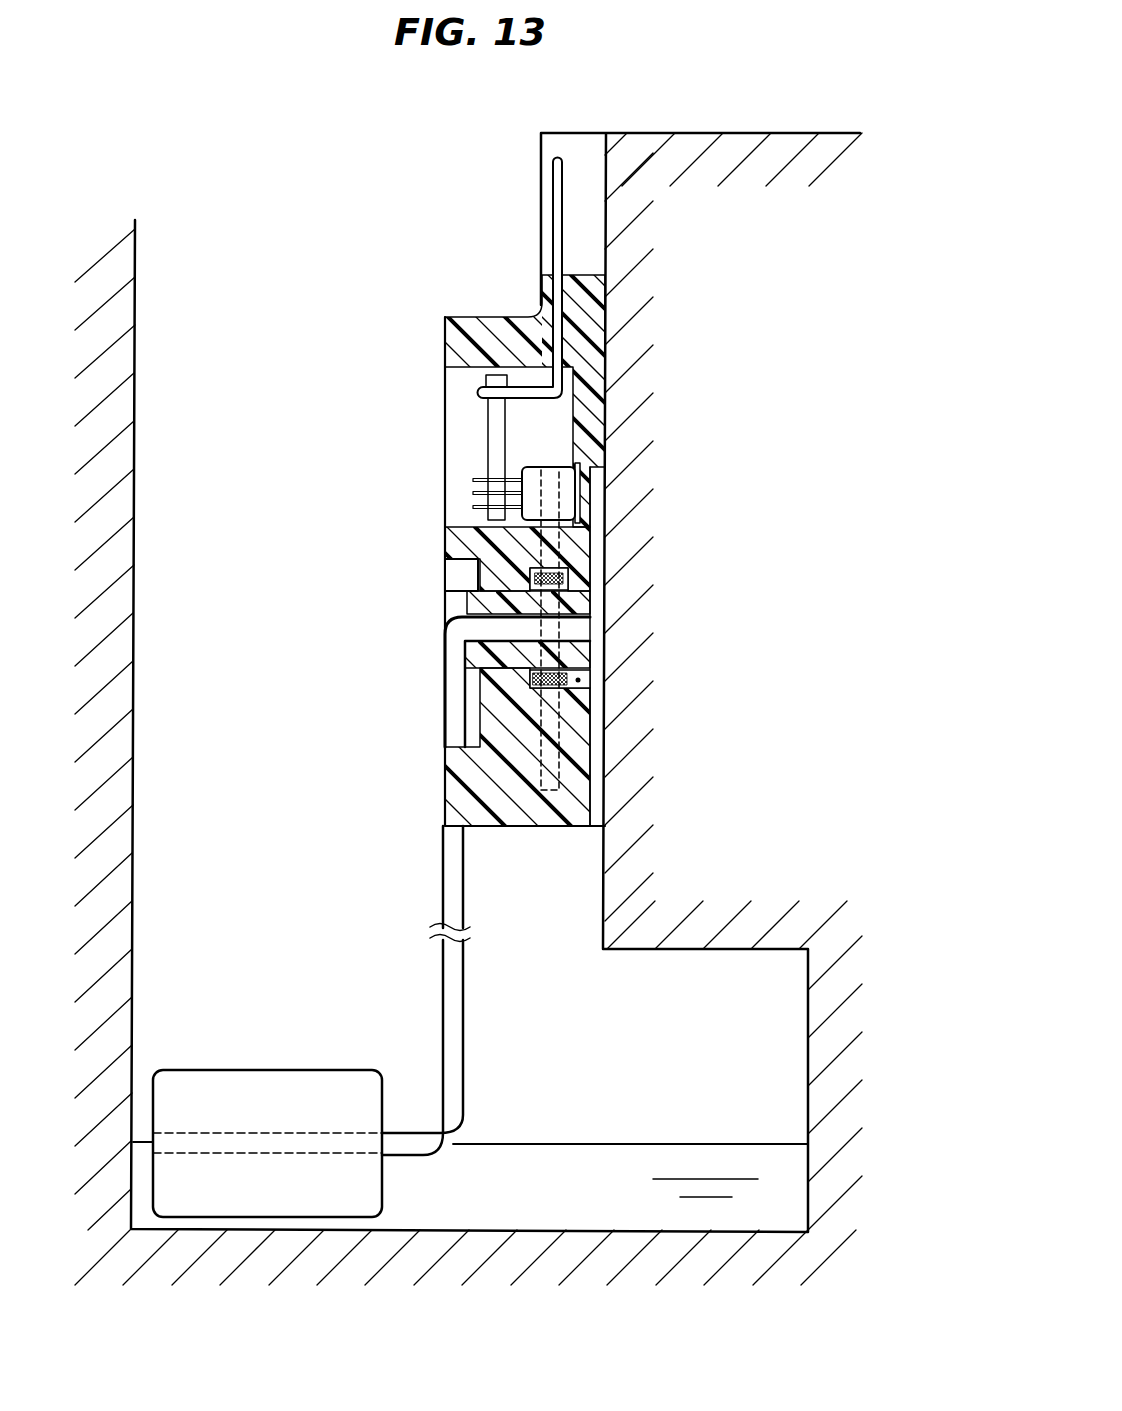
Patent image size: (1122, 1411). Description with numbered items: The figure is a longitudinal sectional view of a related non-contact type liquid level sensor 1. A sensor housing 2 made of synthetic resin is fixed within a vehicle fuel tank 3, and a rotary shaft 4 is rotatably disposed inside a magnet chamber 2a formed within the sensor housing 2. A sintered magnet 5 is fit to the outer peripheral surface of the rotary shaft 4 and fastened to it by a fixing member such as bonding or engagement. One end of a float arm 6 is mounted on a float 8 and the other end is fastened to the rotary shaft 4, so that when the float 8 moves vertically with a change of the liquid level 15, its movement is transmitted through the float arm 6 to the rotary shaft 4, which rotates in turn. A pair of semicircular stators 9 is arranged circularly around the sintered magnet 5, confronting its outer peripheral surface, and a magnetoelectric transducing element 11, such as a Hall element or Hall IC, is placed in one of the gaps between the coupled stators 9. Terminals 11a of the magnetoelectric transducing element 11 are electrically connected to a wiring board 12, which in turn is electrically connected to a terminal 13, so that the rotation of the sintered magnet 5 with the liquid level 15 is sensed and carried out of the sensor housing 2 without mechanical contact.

The non-contact type liquid level sensor 1 is at (290, 201).
The sensor housing 2 is at (457, 345).
The magnet chamber 2a is at (580, 680).
The vehicle fuel tank 3 is at (808, 1072).
The rotary shaft 4 is at (466, 592).
The sintered magnet 5 is at (568, 575).
The float arm 6 is at (443, 886).
The float 8 is at (236, 1068).
The stator 9 is at (560, 767).
The magnetoelectric transducing element 11 is at (533, 473).
The terminals 11a is at (473, 506).
The wiring board 12 is at (487, 426).
The terminal 13 is at (562, 207).
The liquid level 15 is at (560, 1136).